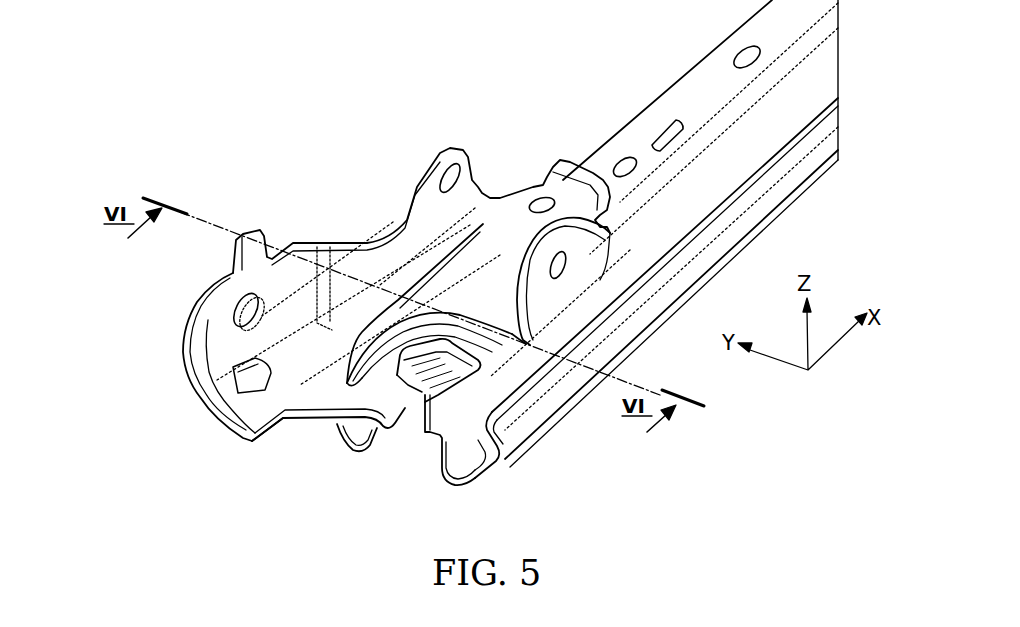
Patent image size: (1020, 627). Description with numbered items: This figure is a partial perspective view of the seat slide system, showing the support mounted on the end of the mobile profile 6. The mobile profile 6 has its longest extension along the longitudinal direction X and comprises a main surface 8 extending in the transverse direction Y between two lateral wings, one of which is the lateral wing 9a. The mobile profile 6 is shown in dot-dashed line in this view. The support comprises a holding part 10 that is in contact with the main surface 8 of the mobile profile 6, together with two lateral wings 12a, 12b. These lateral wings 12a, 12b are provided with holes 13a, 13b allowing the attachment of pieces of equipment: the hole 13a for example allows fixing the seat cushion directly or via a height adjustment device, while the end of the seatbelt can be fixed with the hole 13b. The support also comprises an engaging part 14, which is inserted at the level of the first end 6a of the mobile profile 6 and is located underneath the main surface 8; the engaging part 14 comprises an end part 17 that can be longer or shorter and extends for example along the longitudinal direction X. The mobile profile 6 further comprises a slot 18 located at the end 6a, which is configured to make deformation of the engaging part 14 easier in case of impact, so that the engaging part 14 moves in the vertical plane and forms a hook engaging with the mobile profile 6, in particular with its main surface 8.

The mobile profile 6 is at (593, 400).
The first end of the mobile profile 6a is at (400, 463).
The main surface 8 is at (702, 78).
The lateral wing of the mobile profile 9a is at (462, 420).
The holding part 10 is at (493, 257).
The lateral wing of the support 12a is at (547, 293).
The lateral wing of the support 12b is at (232, 275).
The hole 13a is at (567, 263).
The hole 13b is at (240, 320).
The engaging part 14 is at (330, 443).
The end part 17 is at (460, 380).
The slot 18 is at (418, 365).